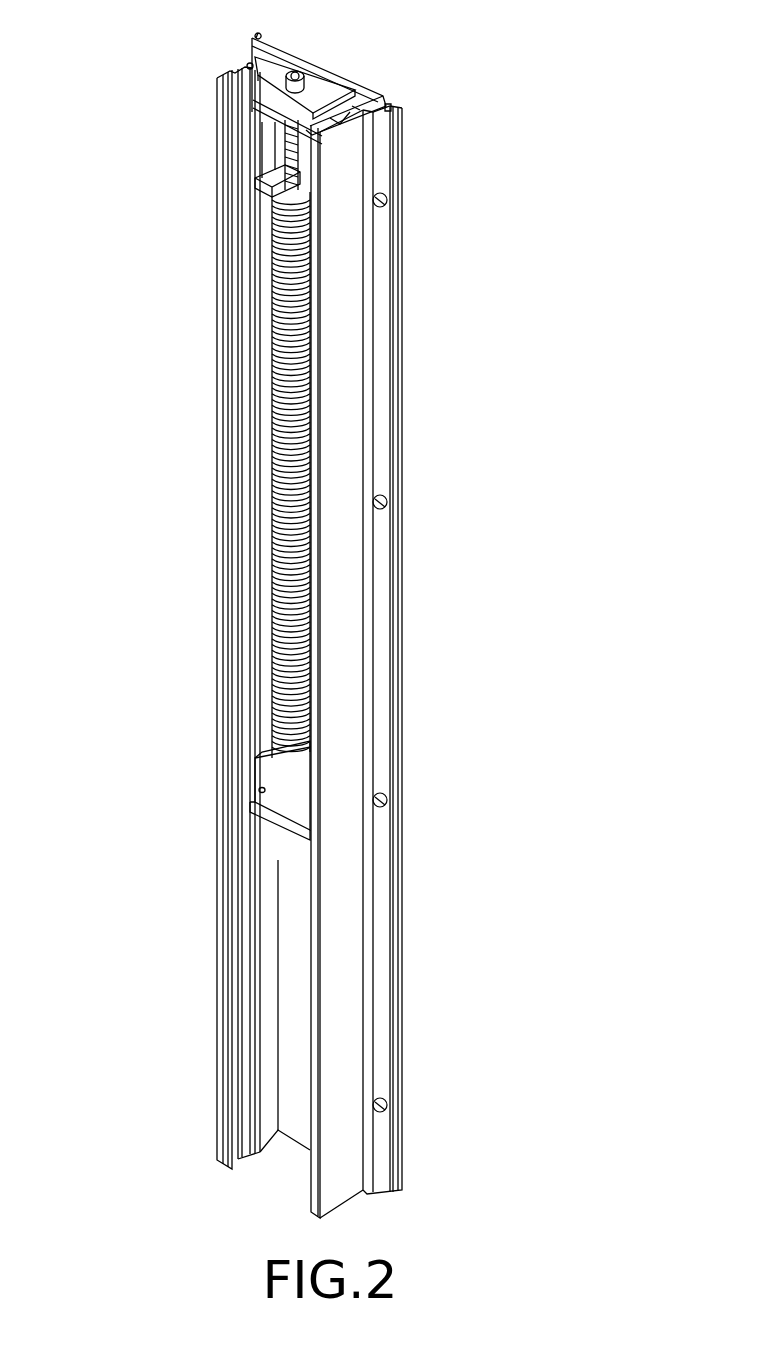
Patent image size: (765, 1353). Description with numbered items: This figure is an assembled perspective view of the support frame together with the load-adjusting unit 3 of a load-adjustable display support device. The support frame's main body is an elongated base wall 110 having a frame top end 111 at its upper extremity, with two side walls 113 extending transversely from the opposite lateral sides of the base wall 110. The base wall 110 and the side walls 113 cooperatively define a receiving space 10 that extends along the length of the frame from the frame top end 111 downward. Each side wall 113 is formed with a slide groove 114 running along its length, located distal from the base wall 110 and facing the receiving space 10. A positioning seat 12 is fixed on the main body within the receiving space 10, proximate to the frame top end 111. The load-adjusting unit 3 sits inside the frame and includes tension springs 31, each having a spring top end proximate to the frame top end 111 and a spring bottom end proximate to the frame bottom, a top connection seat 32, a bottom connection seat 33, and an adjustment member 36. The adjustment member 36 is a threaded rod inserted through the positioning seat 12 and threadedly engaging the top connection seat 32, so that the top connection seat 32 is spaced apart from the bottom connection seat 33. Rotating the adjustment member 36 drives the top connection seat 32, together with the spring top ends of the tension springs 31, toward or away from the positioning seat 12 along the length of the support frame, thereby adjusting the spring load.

The load-adjusting unit 3 is at (270, 405).
The receiving space 10 is at (267, 133).
The positioning seat 12 is at (322, 87).
The tension spring 31 is at (265, 545).
The top connection seat 32 is at (272, 173).
The bottom connection seat 33 is at (287, 803).
The adjustment member 36 is at (335, 133).
The base wall 110 is at (400, 410).
The frame top end 111 is at (288, 46).
The side wall 113 is at (340, 550).
The slide groove 114 is at (250, 67).